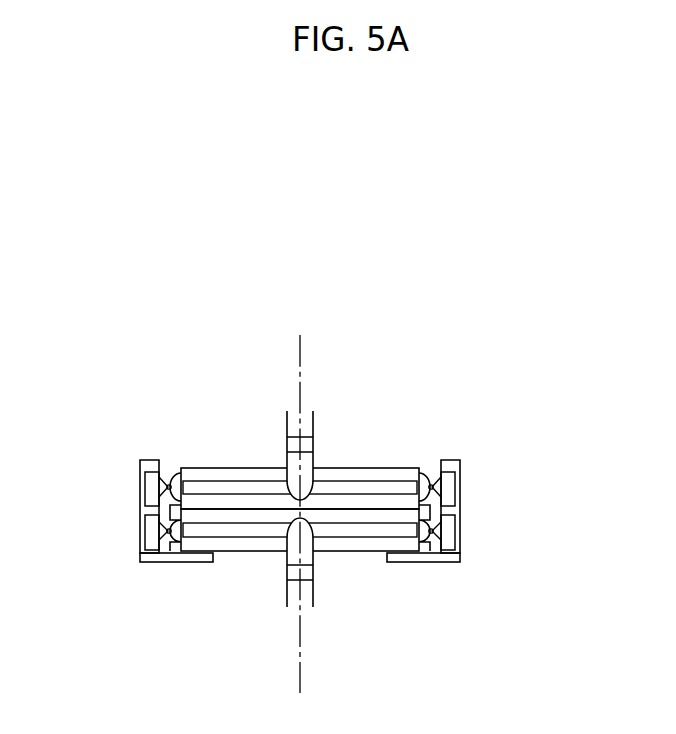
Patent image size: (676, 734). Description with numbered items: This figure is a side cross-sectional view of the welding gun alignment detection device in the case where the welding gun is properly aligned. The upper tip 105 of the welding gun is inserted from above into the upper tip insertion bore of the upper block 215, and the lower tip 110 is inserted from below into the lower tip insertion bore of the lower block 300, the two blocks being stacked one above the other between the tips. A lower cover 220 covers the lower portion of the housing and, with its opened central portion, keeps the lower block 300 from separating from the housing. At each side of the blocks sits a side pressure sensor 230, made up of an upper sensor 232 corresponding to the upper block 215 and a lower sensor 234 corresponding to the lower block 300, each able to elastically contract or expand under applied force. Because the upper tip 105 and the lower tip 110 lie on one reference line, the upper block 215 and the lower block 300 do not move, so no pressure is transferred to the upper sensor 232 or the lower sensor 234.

The upper tip 105 is at (306, 431).
The lower tip 110 is at (308, 588).
The upper block 215 is at (238, 479).
The lower block 300 is at (239, 547).
The lower cover 220 is at (433, 562).
The side pressure sensor 230 is at (83, 506).
The upper sensor 232 is at (152, 487).
The lower sensor 234 is at (152, 533).